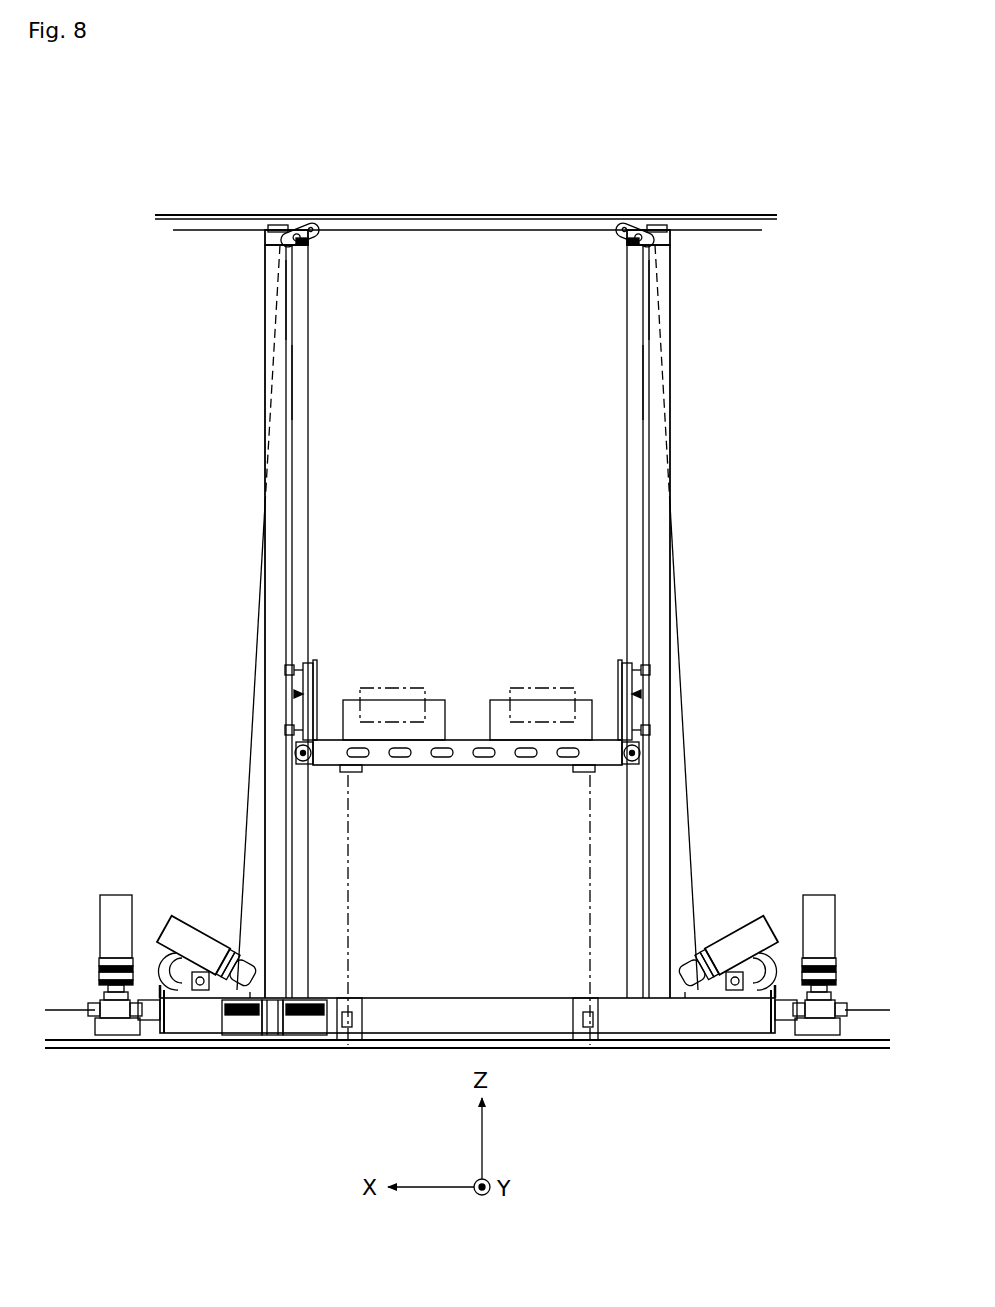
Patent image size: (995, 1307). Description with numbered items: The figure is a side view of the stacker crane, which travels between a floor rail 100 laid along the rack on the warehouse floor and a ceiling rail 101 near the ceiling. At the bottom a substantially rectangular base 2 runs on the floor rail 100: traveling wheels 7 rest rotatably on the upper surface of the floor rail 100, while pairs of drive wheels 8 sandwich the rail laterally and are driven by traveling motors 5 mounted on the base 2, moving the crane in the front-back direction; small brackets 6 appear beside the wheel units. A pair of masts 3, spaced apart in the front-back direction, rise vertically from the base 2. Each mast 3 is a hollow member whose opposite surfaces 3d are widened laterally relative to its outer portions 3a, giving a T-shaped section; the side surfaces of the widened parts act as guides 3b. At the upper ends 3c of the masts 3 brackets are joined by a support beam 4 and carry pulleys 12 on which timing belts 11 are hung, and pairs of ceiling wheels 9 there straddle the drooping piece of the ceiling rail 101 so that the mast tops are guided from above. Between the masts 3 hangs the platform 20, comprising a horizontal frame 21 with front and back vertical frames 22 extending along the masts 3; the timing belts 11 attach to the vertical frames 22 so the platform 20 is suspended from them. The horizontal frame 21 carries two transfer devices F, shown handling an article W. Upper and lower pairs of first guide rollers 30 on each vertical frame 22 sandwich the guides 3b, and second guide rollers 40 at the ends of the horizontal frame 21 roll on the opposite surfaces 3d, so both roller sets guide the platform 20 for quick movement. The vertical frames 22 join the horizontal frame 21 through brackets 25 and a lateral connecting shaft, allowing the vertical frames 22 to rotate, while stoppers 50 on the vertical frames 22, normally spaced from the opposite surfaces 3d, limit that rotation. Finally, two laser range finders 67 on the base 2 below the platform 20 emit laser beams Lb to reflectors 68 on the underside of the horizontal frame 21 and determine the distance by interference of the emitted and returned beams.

The base 2 is at (486, 1000).
The masts 3 is at (255, 504).
The outer portions 3a is at (287, 300).
The guides 3b is at (287, 372).
The upper ends 3c is at (265, 256).
The opposite surfaces 3d is at (269, 437).
The support beam 4 is at (443, 229).
The traveling motors 5 is at (120, 905).
The bracket 6 is at (213, 965).
The traveling wheels 7 is at (188, 940).
The drive wheels 8 is at (120, 1030).
The ceiling wheels 9 is at (283, 226).
The timing belts 11 is at (309, 395).
The pulleys 12 is at (300, 228).
The platform 20 is at (467, 744).
The horizontal frame 21 is at (470, 768).
The vertical frames 22 is at (318, 736).
The brackets 25 is at (320, 743).
The first guide rollers 30 is at (288, 668).
The second guide rollers 40 is at (298, 760).
The stoppers 50 is at (303, 700).
The laser range finders 67 is at (350, 1042).
The reflectors 68 is at (355, 772).
The floor rail 100 is at (75, 1006).
The ceiling rail 101 is at (722, 214).
The article W is at (418, 698).
The transfer devices F is at (385, 690).
The laser beams Lb is at (368, 880).